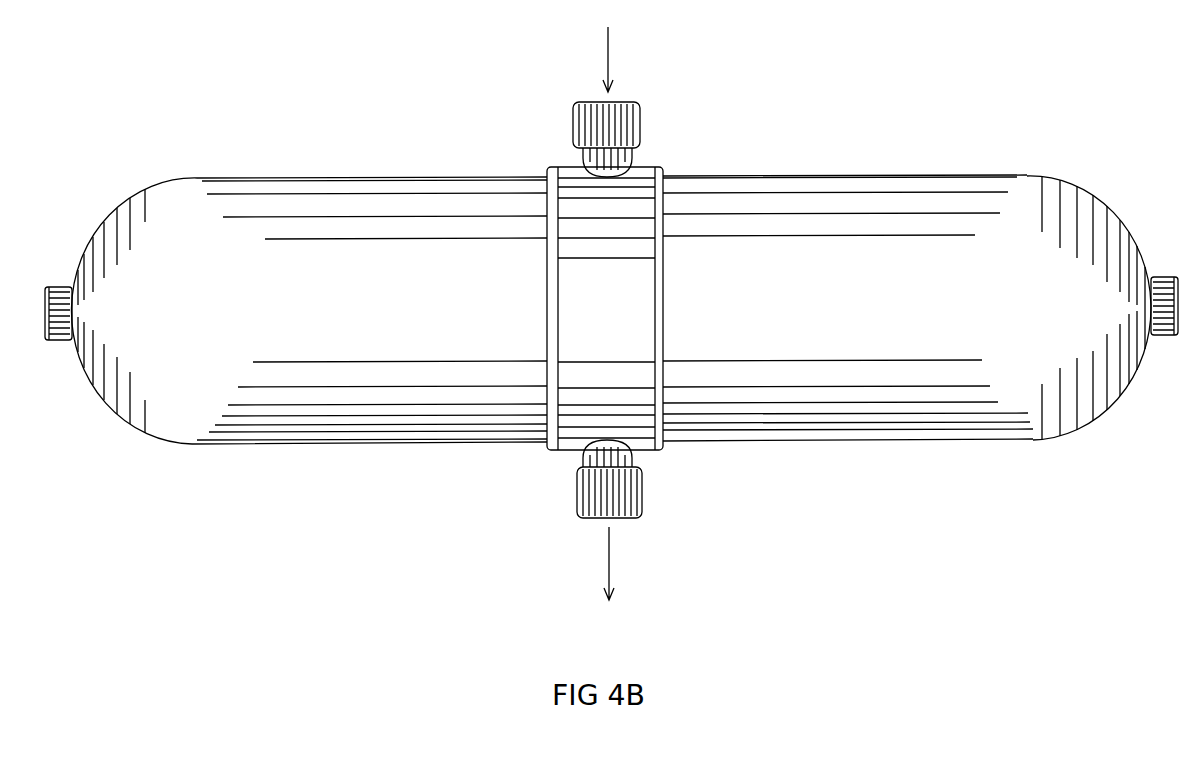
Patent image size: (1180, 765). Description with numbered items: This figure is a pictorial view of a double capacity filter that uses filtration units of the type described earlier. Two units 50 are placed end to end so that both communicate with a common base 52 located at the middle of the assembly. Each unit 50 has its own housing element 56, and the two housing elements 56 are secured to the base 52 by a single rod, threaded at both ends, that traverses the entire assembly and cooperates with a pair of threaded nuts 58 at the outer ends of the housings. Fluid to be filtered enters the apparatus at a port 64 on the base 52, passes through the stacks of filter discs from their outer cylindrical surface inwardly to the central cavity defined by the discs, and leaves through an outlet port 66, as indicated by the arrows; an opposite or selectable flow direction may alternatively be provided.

The filtration unit 50 is at (369, 461).
The common base 52 is at (650, 442).
The housing element 56 is at (183, 444).
The threaded nut 58 is at (53, 342).
The inlet port 64 is at (640, 122).
The outlet port 66 is at (640, 482).